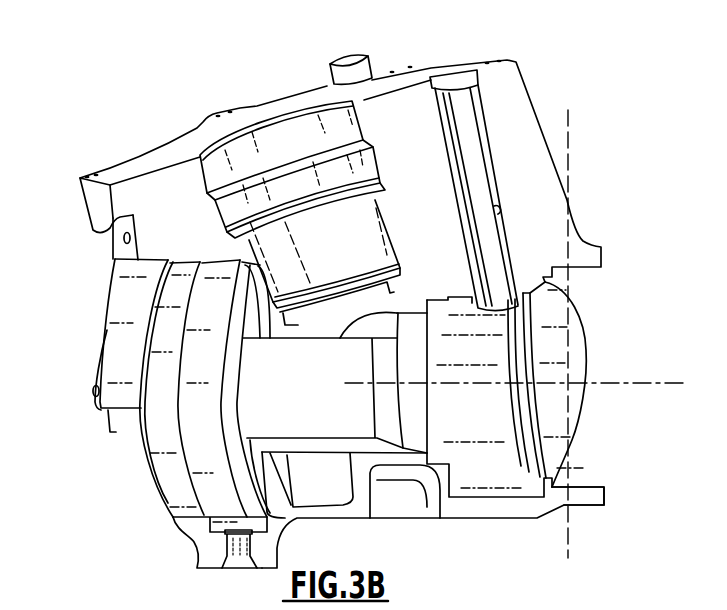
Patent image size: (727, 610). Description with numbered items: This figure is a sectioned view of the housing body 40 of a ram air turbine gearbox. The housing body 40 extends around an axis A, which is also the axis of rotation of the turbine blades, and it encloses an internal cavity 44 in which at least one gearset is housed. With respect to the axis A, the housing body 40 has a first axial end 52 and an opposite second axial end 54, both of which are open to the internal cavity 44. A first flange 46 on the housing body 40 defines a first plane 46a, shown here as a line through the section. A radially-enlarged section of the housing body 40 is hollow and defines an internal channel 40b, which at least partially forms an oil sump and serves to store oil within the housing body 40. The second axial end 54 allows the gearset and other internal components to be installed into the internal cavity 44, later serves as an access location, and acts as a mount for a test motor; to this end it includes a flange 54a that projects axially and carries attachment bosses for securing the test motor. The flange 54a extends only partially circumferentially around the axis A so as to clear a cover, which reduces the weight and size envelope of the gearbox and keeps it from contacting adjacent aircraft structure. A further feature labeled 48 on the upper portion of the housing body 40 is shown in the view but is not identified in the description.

The housing body 40 is at (347, 519).
The internal channel 40b is at (199, 416).
The internal cavity 44 is at (314, 373).
The first flange 46 is at (300, 213).
The first plane 46a is at (568, 155).
The mounting boss 48 is at (380, 66).
The first axial end 52 is at (604, 489).
The second axial end 54 is at (98, 352).
The flange 54a is at (110, 432).
The axis A is at (604, 383).